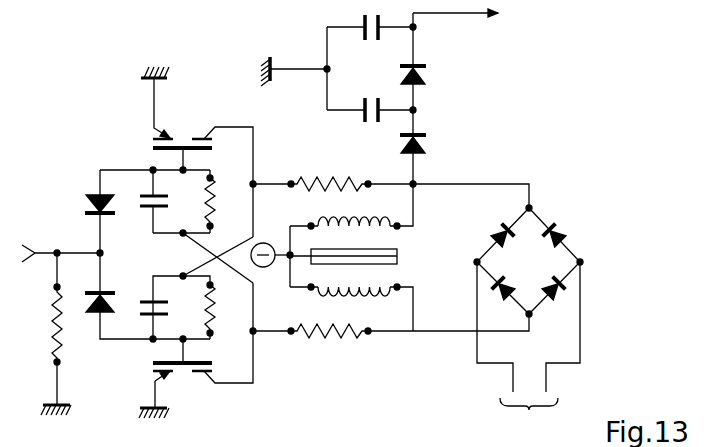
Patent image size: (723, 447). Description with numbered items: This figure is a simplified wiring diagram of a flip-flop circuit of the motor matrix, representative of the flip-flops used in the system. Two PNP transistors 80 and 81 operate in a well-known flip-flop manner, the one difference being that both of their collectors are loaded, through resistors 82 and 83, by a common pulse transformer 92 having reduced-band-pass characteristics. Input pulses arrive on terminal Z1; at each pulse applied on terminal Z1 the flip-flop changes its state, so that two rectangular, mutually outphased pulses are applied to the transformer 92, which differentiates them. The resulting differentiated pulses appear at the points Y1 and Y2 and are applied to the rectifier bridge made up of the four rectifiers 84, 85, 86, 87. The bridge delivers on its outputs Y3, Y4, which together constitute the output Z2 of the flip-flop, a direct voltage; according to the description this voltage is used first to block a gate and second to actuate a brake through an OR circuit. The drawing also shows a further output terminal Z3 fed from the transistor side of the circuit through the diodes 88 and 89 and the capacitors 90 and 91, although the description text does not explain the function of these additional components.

The PNP transistor 80 is at (197, 152).
The PNP transistor 81 is at (177, 345).
The resistor 82 is at (333, 175).
The resistor 83 is at (333, 322).
The rectifier bridge diode 84 is at (491, 224).
The rectifier bridge diode 85 is at (568, 224).
The rectifier bridge diode 86 is at (553, 305).
The rectifier bridge diode 87 is at (500, 305).
The diode 88 is at (430, 145).
The diode 89 is at (431, 73).
The capacitor 90 is at (370, 116).
The capacitor 91 is at (369, 22).
The pulse transformer 92 is at (351, 257).
The input terminal Z1 is at (61, 241).
The flip-flop output Z2 is at (528, 349).
The output terminal Z3 is at (477, 16).
The transformer output point Y1 is at (417, 184).
The transformer output point Y2 is at (410, 333).
The rectifier bridge output Y3 is at (474, 263).
The rectifier bridge output Y4 is at (586, 263).